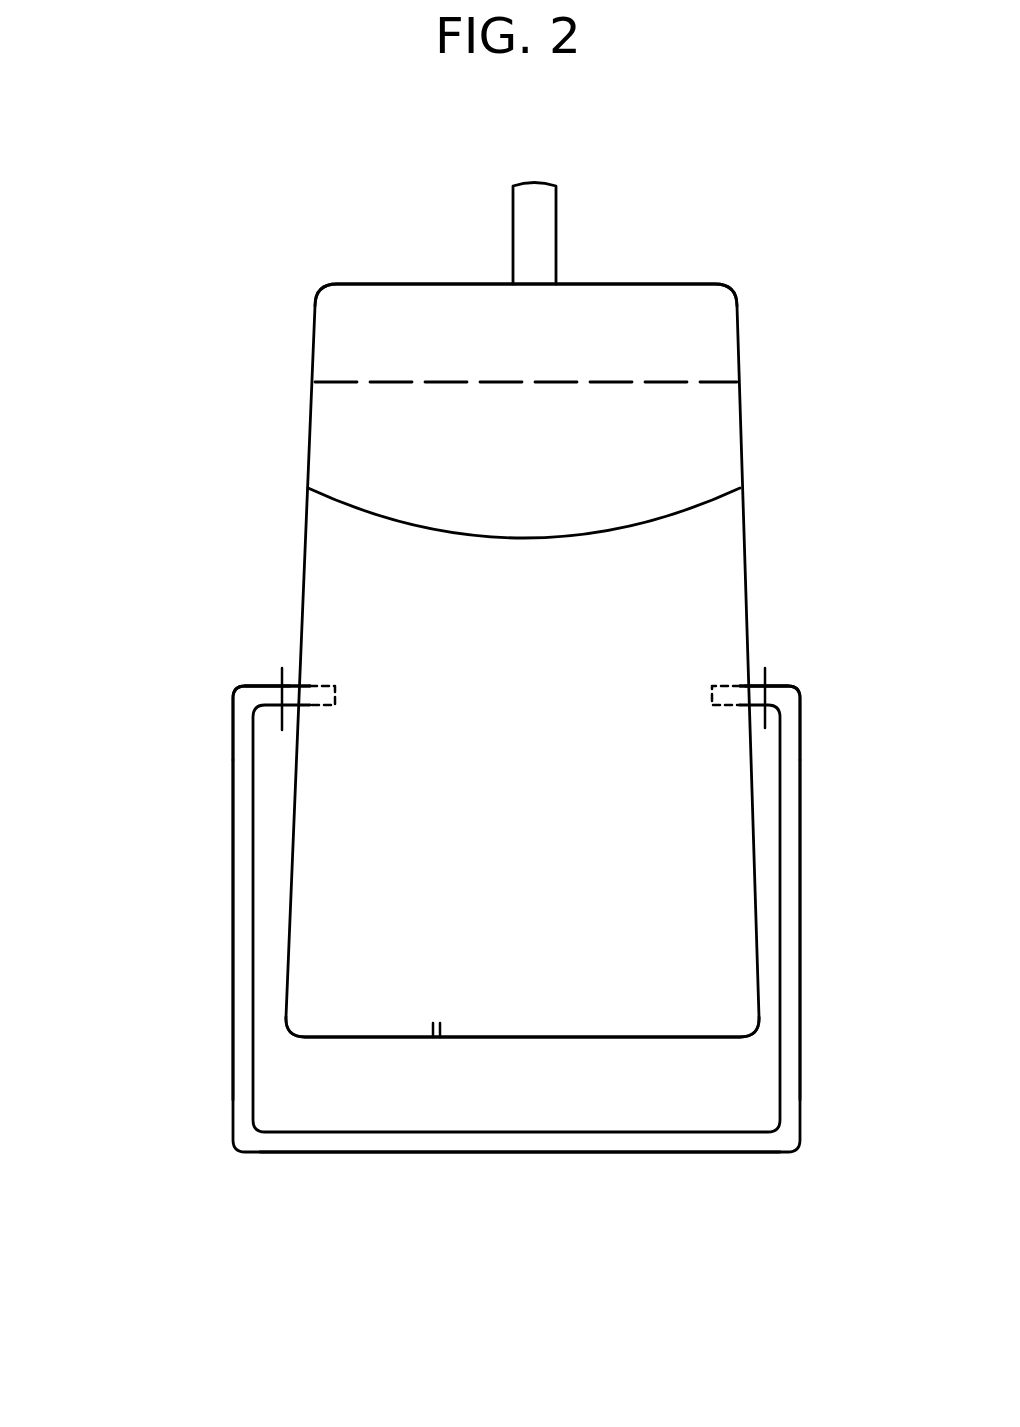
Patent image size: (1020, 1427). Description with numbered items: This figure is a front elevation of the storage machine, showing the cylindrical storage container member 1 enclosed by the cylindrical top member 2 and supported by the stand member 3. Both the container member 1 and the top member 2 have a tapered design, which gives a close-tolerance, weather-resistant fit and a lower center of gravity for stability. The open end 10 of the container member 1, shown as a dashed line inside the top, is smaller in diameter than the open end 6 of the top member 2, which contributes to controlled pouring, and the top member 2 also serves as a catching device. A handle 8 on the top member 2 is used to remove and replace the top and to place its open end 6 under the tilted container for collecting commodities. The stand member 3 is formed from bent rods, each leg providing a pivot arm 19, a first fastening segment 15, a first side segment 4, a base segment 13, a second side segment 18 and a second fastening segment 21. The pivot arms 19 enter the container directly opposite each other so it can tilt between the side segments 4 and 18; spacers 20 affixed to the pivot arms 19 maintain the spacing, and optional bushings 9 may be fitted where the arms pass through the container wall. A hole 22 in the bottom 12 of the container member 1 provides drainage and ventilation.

The cylindrical storage container member 1 is at (697, 612).
The cylindrical top member 2 is at (712, 330).
The stand member 3 is at (230, 1012).
The first side segment 4 is at (799, 908).
The open end of the cylindrical top member 6 is at (513, 537).
The handle 8 is at (557, 213).
The bushings 9 is at (308, 682).
The open end of the cylindrical container member 10 is at (457, 382).
The bottom 12 is at (578, 1037).
The base segment 13 is at (410, 1152).
The first fastening segment 15 is at (800, 722).
The second side segment 18 is at (230, 918).
The pivot arms 19 is at (249, 684).
The spacers 20 is at (285, 718).
The second fastening segment 21 is at (230, 738).
The hole 22 is at (438, 1038).